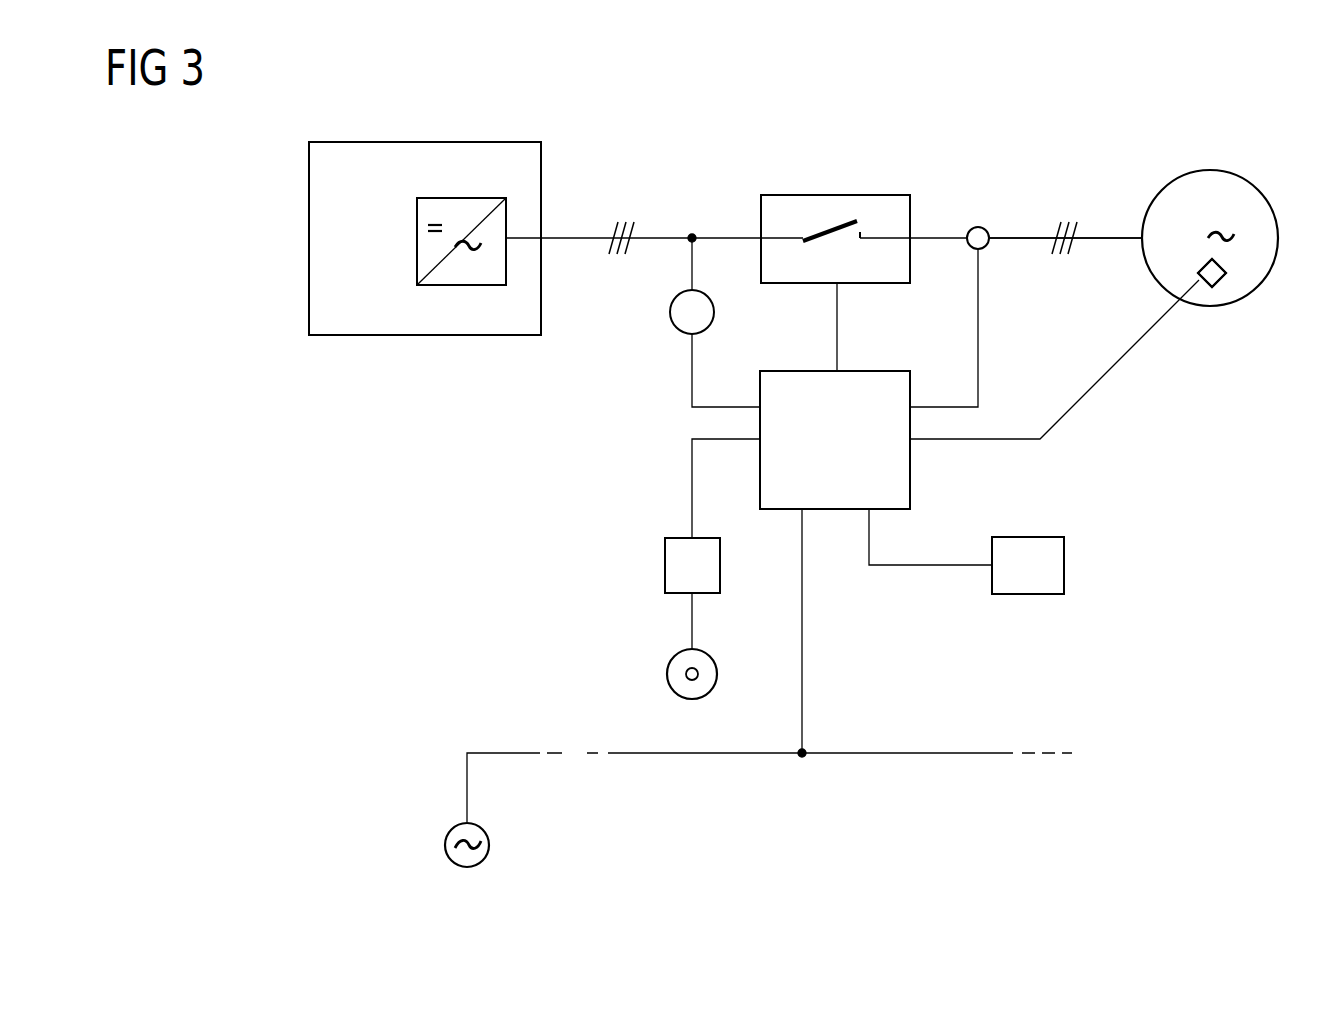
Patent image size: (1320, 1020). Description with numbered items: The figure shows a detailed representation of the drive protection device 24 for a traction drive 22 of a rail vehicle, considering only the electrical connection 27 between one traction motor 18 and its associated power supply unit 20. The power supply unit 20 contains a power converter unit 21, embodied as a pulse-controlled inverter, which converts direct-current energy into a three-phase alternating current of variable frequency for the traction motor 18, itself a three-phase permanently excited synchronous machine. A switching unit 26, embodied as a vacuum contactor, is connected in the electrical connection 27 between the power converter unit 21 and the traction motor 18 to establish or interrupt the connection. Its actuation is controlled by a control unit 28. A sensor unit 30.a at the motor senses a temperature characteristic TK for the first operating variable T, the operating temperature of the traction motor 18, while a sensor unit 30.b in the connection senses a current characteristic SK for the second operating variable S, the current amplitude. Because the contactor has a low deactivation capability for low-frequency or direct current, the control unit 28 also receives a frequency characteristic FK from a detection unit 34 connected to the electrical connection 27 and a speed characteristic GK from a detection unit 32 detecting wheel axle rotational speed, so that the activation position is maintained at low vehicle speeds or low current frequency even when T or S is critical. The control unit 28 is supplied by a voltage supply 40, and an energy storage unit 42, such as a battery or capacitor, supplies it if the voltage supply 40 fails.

The traction motor 18 is at (1227, 170).
The power supply unit 20 is at (470, 137).
The power converter unit 21 is at (468, 286).
The traction drive 22 is at (1112, 103).
The drive protection device 24 is at (873, 154).
The switching unit 26 is at (802, 195).
The electrical connection 27 is at (670, 233).
The control unit 28 is at (910, 482).
The sensor unit 30.a is at (1224, 284).
The sensor unit 30.b is at (986, 229).
The detection unit 32 is at (665, 566).
The detection unit 34 is at (670, 312).
The voltage supply 40 is at (446, 845).
The energy storage unit 42 is at (1064, 565).
The second operating variable S is at (1107, 237).
The first operating variable T is at (1225, 269).
The frequency characteristic FK is at (692, 379).
The speed characteristic GK is at (692, 484).
The current characteristic SK is at (978, 326).
The temperature characteristic TK is at (1113, 370).